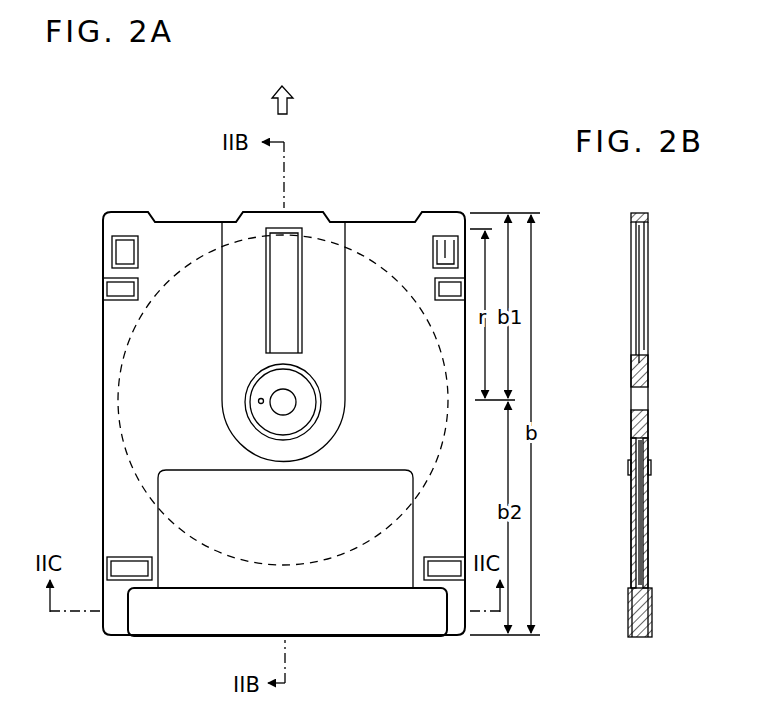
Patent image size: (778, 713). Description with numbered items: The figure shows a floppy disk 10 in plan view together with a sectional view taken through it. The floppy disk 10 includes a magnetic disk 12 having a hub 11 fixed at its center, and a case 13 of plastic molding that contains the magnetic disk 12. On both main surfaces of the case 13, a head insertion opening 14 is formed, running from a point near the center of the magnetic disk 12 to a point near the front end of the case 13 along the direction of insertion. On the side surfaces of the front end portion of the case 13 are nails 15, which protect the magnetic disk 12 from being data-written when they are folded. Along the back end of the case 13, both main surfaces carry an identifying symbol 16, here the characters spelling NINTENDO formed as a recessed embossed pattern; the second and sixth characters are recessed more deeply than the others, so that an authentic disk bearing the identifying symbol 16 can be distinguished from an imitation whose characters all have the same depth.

In FIG. 2A, the floppy disk 10 is at (338, 162).
In FIG. 2A, the hub 11 is at (311, 400).
In FIG. 2B, the hub 11 is at (648, 421).
In FIG. 2A, the magnetic disk 12 is at (358, 262).
In FIG. 2B, the magnetic disk 12 is at (640, 251).
In FIG. 2A, the case 13 is at (397, 231).
In FIG. 2B, the case 13 is at (630, 470).
In FIG. 2A, the head insertion opening 14 is at (266, 268).
In FIG. 2B, the head insertion opening 14 is at (630, 295).
In FIG. 2A, the nails 15 is at (447, 254).
In FIG. 2A, the identifying symbol 16 is at (205, 636).
In FIG. 2B, the identifying symbol 16 is at (623, 612).